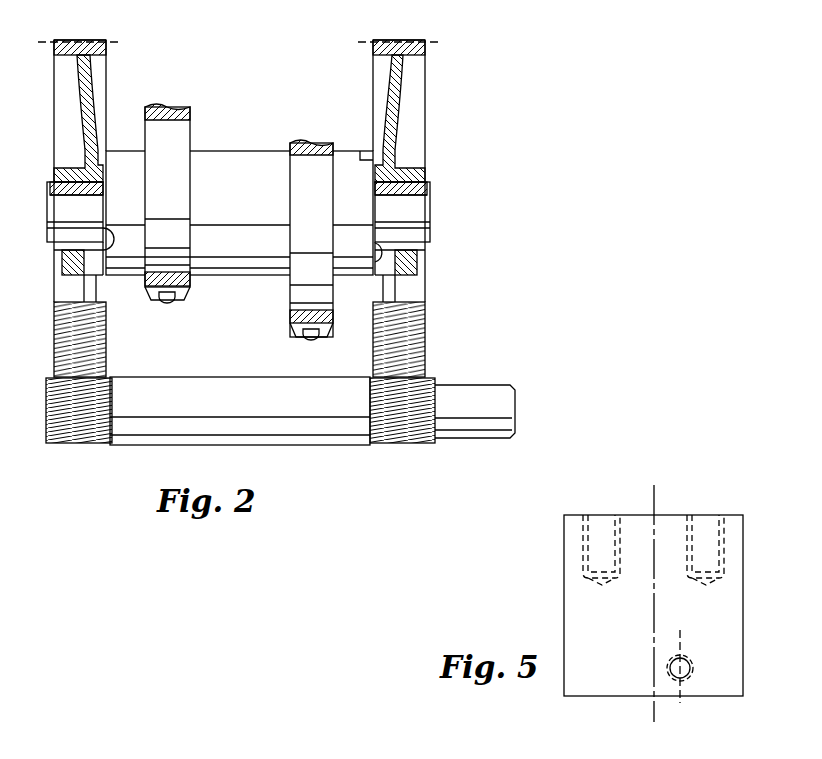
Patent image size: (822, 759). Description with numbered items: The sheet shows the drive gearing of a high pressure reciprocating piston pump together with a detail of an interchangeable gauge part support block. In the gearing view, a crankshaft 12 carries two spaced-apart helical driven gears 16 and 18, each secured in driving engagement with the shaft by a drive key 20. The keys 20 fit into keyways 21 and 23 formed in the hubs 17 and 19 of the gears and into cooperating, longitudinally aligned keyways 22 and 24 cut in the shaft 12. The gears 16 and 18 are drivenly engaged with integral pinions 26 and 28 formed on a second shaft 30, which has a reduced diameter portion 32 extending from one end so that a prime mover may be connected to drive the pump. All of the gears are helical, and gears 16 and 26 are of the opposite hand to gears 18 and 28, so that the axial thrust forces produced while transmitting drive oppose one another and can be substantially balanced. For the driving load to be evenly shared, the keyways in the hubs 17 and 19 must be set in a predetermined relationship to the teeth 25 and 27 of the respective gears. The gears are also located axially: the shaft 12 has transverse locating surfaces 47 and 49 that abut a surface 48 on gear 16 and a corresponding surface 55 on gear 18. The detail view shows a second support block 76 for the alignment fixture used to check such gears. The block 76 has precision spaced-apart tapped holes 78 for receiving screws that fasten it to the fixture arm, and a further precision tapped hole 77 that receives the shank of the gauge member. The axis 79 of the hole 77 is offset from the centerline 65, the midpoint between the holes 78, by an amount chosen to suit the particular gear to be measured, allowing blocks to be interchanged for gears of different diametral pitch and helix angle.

In FIG. 2, the crankshaft 12 is at (246, 151).
In FIG. 2, the driven gear 16 is at (85, 40).
In FIG. 2, the hub 17 is at (58, 262).
In FIG. 2, the driven gear 18 is at (400, 40).
In FIG. 2, the hub 19 is at (420, 270).
In FIG. 2, the drive key 20 is at (72, 180).
In FIG. 2, the keyway 21 is at (95, 190).
In FIG. 2, the keyway 22 is at (60, 163).
In FIG. 2, the keyway 23 is at (385, 201).
In FIG. 2, the keyway 24 is at (428, 184).
In FIG. 2, the teeth 25 is at (95, 40).
In FIG. 2, the pinion 26 is at (98, 445).
In FIG. 2, the teeth 27 is at (412, 40).
In FIG. 2, the pinion 28 is at (428, 445).
In FIG. 2, the shaft 30 is at (325, 445).
In FIG. 2, the reduced diameter portion 32 is at (465, 440).
In FIG. 2, the transverse locating surface 47 is at (97, 148).
In FIG. 2, the surface 48 is at (47, 232).
In FIG. 2, the transverse locating surface 49 is at (355, 252).
In FIG. 2, the surface 55 is at (368, 162).
In FIG. 5, the centerline 65 is at (654, 617).
In FIG. 5, the support block 76 is at (564, 598).
In FIG. 5, the tapped hole 77 is at (688, 670).
In FIG. 5, the tapped holes 78 is at (590, 528).
In FIG. 5, the axis 79 is at (682, 640).